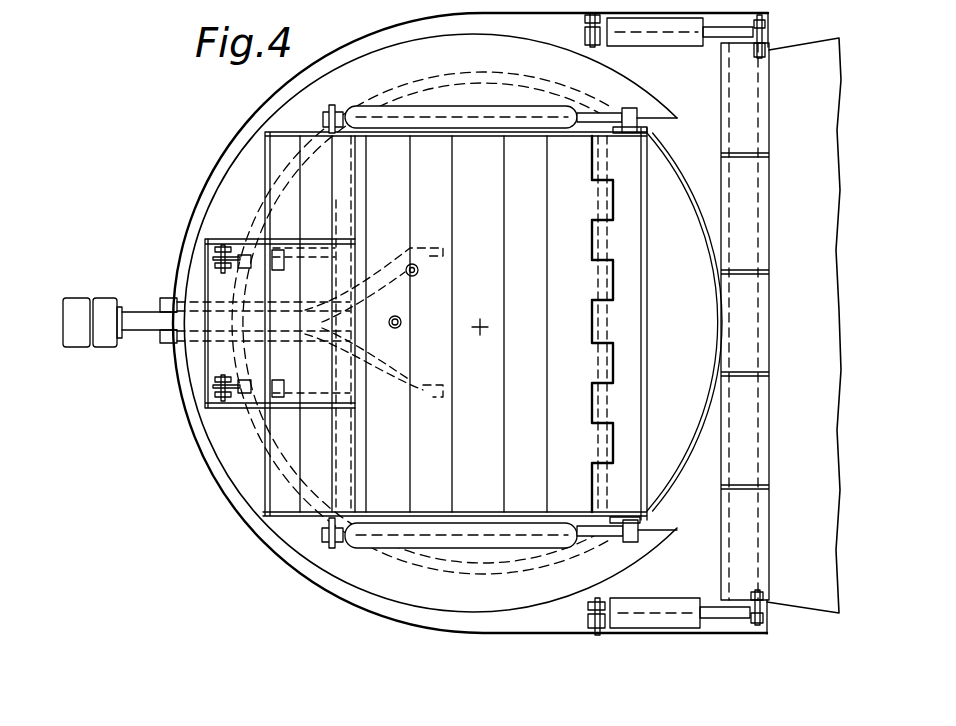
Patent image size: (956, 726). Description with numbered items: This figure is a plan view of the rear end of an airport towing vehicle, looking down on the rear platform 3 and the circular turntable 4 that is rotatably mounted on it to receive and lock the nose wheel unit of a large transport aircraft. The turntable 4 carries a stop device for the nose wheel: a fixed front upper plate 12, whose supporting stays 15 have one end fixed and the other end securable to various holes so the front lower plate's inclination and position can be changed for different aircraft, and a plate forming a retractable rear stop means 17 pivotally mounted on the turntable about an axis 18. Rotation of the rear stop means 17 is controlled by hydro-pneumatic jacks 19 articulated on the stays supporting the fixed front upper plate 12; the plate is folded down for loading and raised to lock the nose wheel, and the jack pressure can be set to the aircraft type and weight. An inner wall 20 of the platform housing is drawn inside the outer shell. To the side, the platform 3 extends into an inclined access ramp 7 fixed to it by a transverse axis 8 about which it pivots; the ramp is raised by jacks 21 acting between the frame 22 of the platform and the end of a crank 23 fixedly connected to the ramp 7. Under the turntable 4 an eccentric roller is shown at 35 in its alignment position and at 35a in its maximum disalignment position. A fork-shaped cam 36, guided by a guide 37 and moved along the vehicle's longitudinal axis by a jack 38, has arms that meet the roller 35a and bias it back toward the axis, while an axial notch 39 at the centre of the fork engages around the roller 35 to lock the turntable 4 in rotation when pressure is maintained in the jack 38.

The platform 3 is at (538, 628).
The turntable 4 is at (427, 97).
The access ramp 7 is at (801, 60).
The transverse axis 8 is at (745, 552).
The fixed front upper plate 12 is at (310, 505).
The stays 15 is at (247, 240).
The retractable rear stop means 17 is at (645, 508).
The axis 18 is at (645, 157).
The jacks 19 is at (377, 528).
The housing inner wall 20 is at (465, 603).
The jacks 21 is at (688, 612).
The frame 22 is at (600, 633).
The crank 23 is at (778, 610).
The roller 35 is at (403, 322).
The roller in disalignment position 35a is at (420, 270).
The cam 36 is at (390, 383).
The guide 37 is at (168, 345).
The jack 38 is at (99, 346).
The axial notch 39 is at (440, 313).